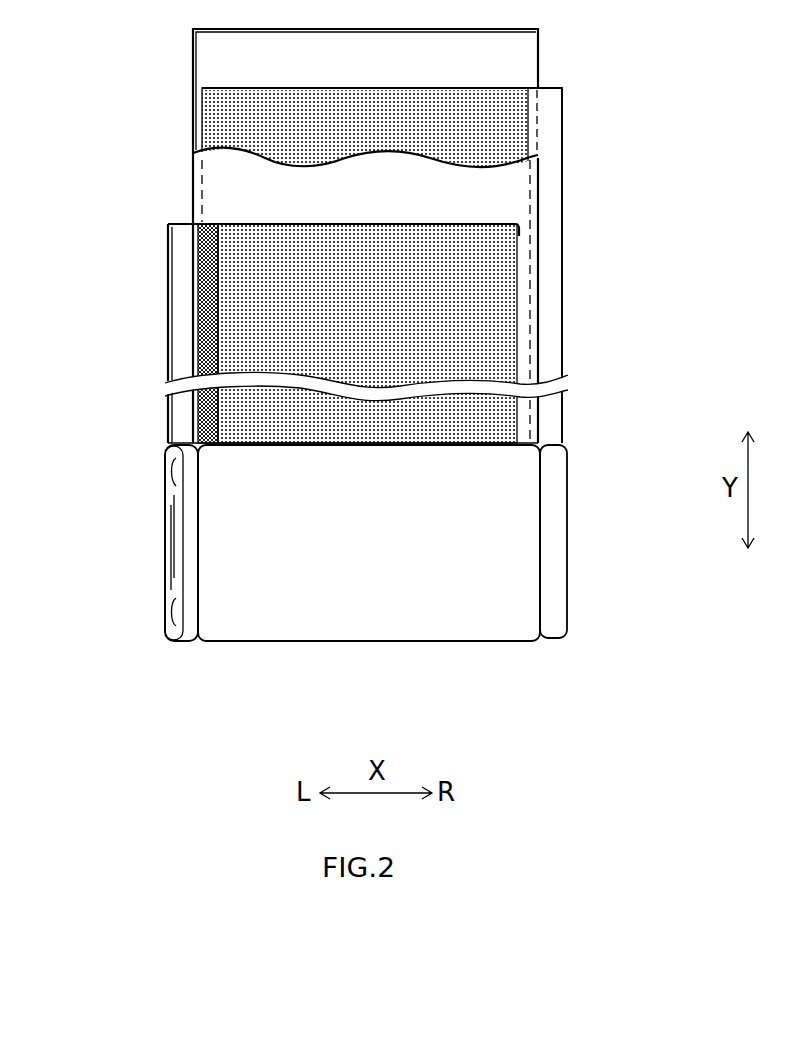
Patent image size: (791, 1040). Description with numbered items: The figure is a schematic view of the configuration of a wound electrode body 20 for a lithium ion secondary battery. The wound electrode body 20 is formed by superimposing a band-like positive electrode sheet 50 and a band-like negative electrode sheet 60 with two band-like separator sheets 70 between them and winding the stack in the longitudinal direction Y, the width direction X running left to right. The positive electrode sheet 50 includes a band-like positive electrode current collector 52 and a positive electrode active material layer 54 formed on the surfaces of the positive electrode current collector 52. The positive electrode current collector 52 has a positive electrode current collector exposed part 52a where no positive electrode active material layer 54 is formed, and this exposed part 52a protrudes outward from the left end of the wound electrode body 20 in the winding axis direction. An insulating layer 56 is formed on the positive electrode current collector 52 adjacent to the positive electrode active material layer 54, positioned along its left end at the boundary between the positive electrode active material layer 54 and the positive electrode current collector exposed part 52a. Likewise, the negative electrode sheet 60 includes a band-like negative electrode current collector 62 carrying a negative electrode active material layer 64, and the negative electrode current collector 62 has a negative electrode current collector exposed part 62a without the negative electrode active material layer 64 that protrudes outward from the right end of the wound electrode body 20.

The wound electrode body 20 is at (438, 630).
The positive electrode sheet 50 is at (157, 302).
The positive electrode current collector 52 is at (165, 370).
The positive electrode current collector exposed part 52a is at (180, 330).
The positive electrode active material layer 54 is at (250, 246).
The insulating layer 56 is at (200, 415).
The negative electrode sheet 60 is at (573, 173).
The negative electrode current collector 62 is at (563, 274).
The negative electrode current collector exposed part 62a is at (550, 218).
The negative electrode active material layer 64 is at (526, 114).
The separator sheet 70 is at (212, 66).